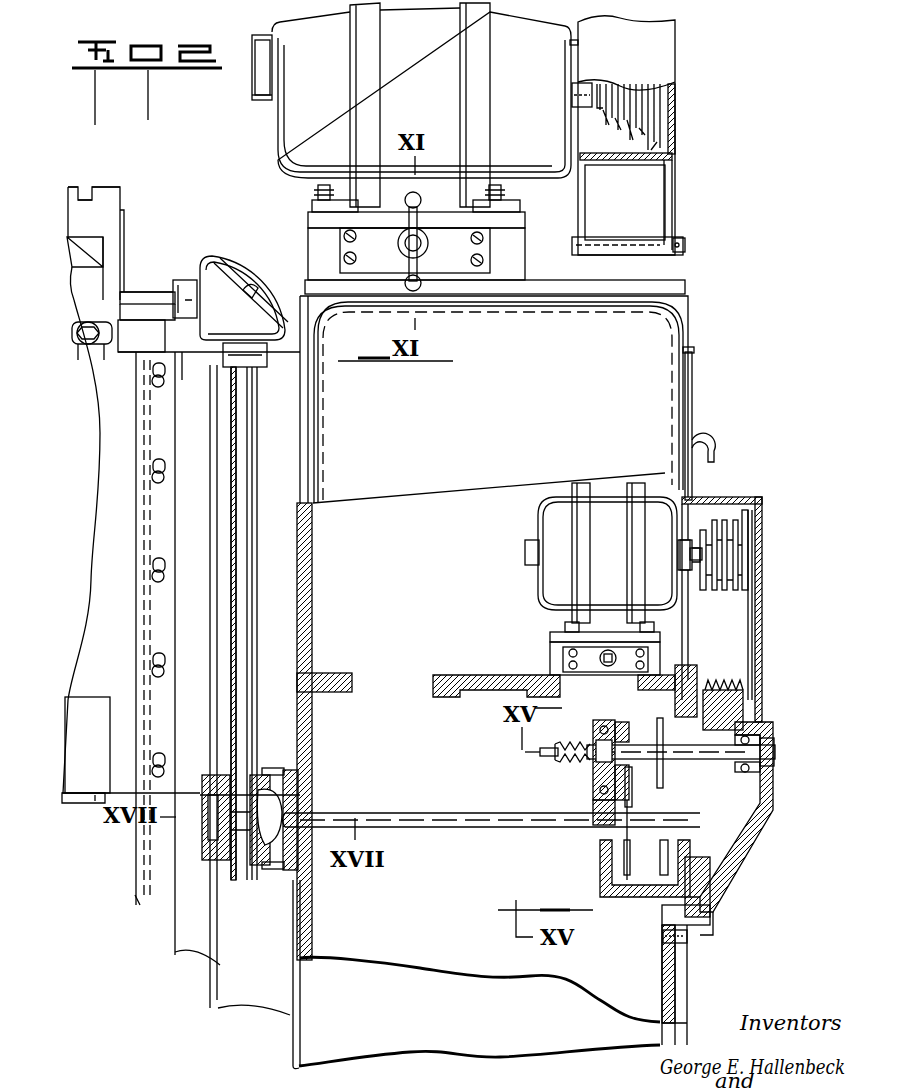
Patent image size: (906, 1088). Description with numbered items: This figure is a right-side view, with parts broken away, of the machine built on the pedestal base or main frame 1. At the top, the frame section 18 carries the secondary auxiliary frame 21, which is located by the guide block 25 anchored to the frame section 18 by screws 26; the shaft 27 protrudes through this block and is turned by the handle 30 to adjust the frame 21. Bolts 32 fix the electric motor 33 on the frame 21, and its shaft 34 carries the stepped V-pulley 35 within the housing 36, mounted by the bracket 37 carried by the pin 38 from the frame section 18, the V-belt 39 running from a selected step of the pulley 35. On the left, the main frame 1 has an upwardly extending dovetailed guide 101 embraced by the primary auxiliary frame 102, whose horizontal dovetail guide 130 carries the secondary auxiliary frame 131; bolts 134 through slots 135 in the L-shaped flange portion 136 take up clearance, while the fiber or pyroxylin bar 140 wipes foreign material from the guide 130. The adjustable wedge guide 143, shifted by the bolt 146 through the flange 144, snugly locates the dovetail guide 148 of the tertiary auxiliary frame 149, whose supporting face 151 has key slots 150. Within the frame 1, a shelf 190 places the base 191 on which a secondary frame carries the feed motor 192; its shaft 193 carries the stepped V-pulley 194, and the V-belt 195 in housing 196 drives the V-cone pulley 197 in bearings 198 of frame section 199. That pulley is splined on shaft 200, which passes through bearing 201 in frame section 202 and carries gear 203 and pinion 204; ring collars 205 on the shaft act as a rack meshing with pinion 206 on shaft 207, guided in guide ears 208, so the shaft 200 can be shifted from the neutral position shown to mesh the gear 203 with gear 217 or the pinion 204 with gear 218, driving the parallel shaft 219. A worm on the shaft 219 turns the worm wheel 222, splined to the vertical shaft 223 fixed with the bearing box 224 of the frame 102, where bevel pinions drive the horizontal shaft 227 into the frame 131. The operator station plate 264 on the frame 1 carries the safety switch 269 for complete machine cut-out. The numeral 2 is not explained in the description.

The main frame 1 is at (306, 1042).
The motor base block 2 is at (528, 281).
The frame section 18 is at (566, 268).
The secondary auxiliary frame 21 is at (308, 216).
The guide block 25 is at (449, 297).
The screws 26 is at (354, 258).
The shaft 27 is at (608, 650).
The handle 30 is at (416, 196).
The bolts 32 is at (316, 191).
The electric motor 33 is at (276, 146).
The shaft 34 is at (250, 80).
The stepped V-pulley 35 is at (628, 102).
The housing 36 is at (662, 67).
The bracket 37 is at (674, 214).
The pin 38 is at (645, 228).
The V-belt 39 is at (604, 110).
The dovetailed guide 101 is at (176, 957).
The primary auxiliary frame 102 is at (90, 814).
The dovetail horizontally-extending guide 130 is at (148, 292).
The secondary auxiliary frame 131 is at (108, 256).
The bolts 134 is at (90, 322).
The slots 135 is at (108, 358).
The flange portion 136 is at (79, 358).
The fiber or pyroxylin bar 140 is at (141, 336).
The adjustable guide 143 is at (95, 243).
The flange 144 is at (122, 242).
The bolt 146 is at (127, 248).
The dovetail guide 148 is at (110, 250).
The tertiary auxiliary frame 149 is at (122, 187).
The key slots 150 is at (100, 170).
The supporting face 151 is at (104, 186).
The shelf 190 is at (478, 664).
The base 191 is at (550, 655).
The motor 192 is at (545, 587).
The shaft 193 is at (692, 545).
The stepped V-pulley 194 is at (730, 520).
The V-belt 195 is at (756, 622).
The housing 196 is at (762, 578).
The V-cone pulley 197 is at (737, 691).
The bearings 198 is at (776, 746).
The frame section 199 is at (668, 912).
The shaft 200 is at (776, 758).
The bearing 201 is at (592, 775).
The frame section 202 is at (615, 898).
The gear 203 is at (664, 727).
The pinion 204 is at (637, 745).
The ring collars 205 is at (553, 762).
The pinion 206 is at (540, 748).
The shaft 207 is at (566, 736).
The guide ears 208 is at (525, 745).
The gear 217 is at (652, 858).
The gear 218 is at (600, 863).
The shaft 219 is at (434, 828).
The worm wheel 222 is at (306, 797).
The vertically-extending shaft 223 is at (313, 582).
The bearing box 224 is at (232, 266).
The horizontally-extending shaft 227 is at (200, 288).
The plate 264 is at (694, 396).
The safety switch 269 is at (715, 450).